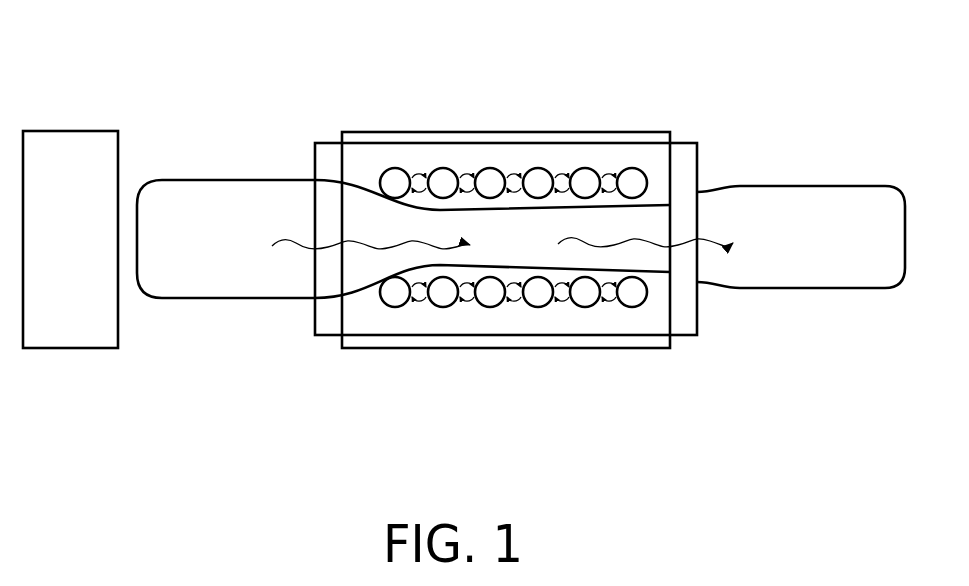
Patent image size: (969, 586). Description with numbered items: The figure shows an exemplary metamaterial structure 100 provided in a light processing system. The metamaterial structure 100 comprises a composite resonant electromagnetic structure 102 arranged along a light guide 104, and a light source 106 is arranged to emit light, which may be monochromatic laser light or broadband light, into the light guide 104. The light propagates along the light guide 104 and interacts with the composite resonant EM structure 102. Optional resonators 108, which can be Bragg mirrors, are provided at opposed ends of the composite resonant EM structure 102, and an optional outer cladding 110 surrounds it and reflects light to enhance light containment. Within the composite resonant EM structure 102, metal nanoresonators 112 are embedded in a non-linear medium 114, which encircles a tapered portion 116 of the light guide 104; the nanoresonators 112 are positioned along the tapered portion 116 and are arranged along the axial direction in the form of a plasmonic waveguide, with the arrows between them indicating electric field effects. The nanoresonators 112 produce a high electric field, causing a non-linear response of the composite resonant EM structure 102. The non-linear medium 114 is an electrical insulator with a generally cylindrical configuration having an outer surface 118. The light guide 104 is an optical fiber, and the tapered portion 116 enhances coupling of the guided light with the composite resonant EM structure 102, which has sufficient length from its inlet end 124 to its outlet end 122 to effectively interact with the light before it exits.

The metamaterial structure 100 is at (742, 103).
The composite resonant electromagnetic structure 102 is at (700, 159).
The light guide 104 is at (245, 180).
The light source 106 is at (50, 348).
The resonators 108 is at (330, 335).
The outer cladding 110 is at (615, 132).
The metal nanoresonators 112 is at (443, 183).
The non-linear medium 114 is at (367, 163).
The tapered portion 116 is at (531, 208).
The outer surface 118 is at (548, 143).
The outlet end 122 is at (670, 310).
The inlet end 124 is at (342, 312).